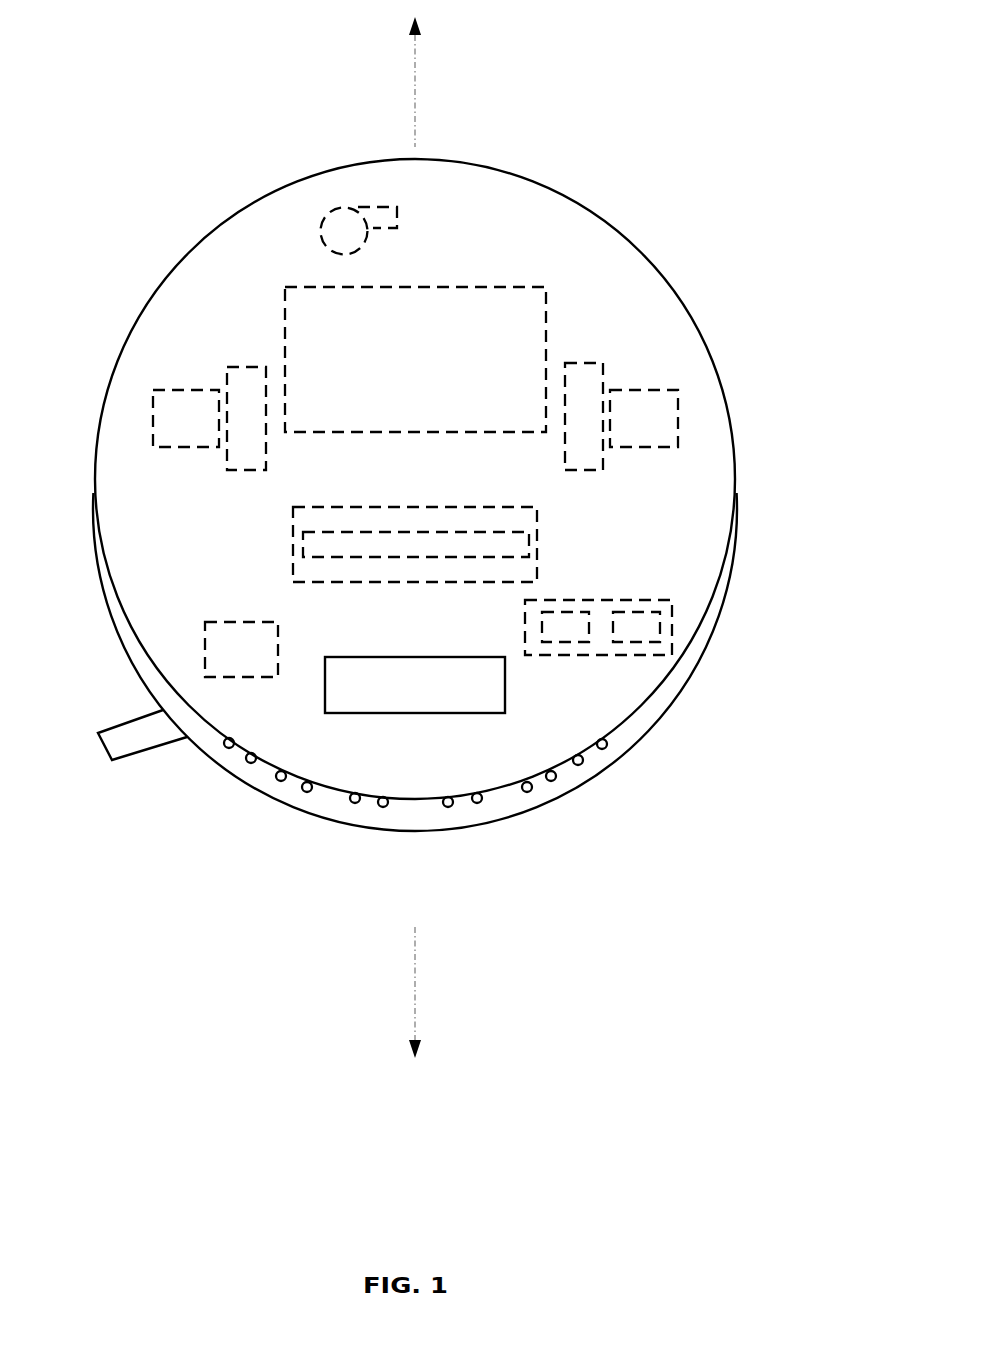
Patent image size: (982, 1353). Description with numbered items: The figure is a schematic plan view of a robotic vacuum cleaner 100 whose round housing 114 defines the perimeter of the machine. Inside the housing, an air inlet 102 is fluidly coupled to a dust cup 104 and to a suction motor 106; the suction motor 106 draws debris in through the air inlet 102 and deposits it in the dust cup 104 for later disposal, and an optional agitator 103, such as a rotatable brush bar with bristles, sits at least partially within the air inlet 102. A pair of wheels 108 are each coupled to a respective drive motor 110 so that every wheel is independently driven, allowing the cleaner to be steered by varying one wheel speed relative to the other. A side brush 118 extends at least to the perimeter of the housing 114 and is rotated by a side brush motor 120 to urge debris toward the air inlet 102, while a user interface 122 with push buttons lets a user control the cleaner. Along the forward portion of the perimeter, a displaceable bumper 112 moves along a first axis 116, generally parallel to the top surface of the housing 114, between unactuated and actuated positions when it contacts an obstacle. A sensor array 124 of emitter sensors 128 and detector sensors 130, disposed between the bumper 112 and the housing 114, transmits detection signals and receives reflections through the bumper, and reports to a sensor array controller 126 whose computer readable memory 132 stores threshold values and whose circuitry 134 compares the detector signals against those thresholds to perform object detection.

The robotic vacuum cleaner 100 is at (130, 65).
The air inlet 102 is at (293, 509).
The agitator 103 is at (303, 545).
The dust cup 104 is at (285, 300).
The suction motor 106 is at (322, 228).
The wheel 108 is at (565, 443).
The drive motor 110 is at (640, 448).
The displaceable bumper 112 is at (657, 723).
The housing 114 is at (723, 392).
The first axis 116 is at (415, 945).
The side brush 118 is at (128, 757).
The side brush motor 120 is at (237, 680).
The user interface 122 is at (465, 713).
The sensor array 124 is at (470, 821).
The sensor array controller 126 is at (610, 655).
The emitter sensor 128 is at (583, 762).
The detector sensor 130 is at (607, 745).
The computer readable memory 132 is at (567, 610).
The circuitry 134 is at (633, 610).